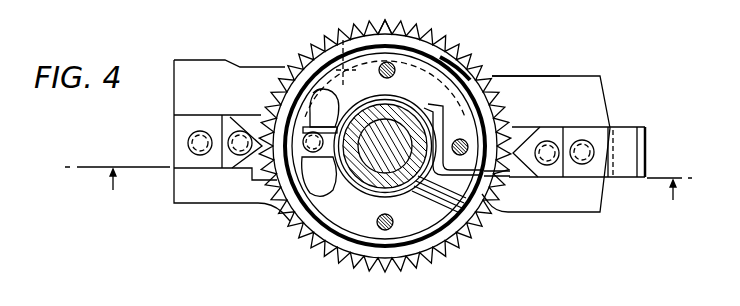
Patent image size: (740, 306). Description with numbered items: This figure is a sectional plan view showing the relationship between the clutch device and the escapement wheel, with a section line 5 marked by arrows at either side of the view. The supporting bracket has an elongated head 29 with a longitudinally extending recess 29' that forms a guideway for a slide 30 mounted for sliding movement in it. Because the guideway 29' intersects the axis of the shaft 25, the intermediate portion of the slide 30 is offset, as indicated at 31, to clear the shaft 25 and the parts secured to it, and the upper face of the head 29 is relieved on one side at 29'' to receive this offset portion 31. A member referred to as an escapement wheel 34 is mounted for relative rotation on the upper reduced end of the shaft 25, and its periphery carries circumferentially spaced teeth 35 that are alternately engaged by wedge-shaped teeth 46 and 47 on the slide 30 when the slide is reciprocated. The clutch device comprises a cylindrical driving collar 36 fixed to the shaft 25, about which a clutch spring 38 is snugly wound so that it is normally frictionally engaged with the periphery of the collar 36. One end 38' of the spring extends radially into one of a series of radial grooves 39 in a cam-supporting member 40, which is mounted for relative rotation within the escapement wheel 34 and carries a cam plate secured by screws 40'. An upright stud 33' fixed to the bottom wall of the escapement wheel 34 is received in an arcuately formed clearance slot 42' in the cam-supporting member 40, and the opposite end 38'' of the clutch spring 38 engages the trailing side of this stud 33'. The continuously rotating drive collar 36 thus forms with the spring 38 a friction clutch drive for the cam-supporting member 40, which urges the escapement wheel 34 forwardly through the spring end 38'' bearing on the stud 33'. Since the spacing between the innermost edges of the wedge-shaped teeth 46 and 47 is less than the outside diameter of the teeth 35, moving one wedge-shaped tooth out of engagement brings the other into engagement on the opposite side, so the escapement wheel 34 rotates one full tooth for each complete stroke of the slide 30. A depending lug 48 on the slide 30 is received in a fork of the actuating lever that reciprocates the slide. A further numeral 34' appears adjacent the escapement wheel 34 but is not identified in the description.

The section line 5- 5 is at (378, 174).
The shaft 25 is at (378, 160).
The elongated head 29 is at (546, 128).
The longitudinally extending recess 29' is at (409, 125).
The relieved portion of head 29'' is at (526, 65).
The slide 30 is at (516, 172).
The offset portion of slide 31 is at (343, 42).
The upright stud 33' is at (237, 168).
The escapement wheel 34 is at (385, 146).
The gear segment 34' is at (243, 179).
The circumferentially spaced teeth 35 is at (398, 28).
The cylindrical driving collar 36 is at (400, 184).
The clutch spring 38 is at (453, 139).
The end of clutch spring 38' is at (510, 133).
The opposite end of clutch spring 38'' is at (295, 70).
The radial grooves 39 is at (470, 200).
The cam-supporting member 40 is at (401, 164).
The screws 40' is at (441, 51).
The arcuately formed clearance slot 42' is at (311, 107).
The wedge-shaped tooth 46 is at (247, 115).
The wedge-shaped tooth 47 is at (537, 127).
The depending lug 48 is at (645, 178).